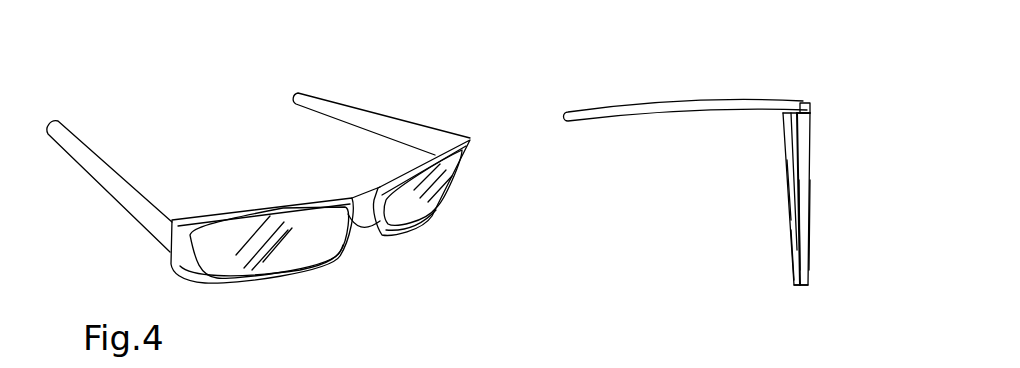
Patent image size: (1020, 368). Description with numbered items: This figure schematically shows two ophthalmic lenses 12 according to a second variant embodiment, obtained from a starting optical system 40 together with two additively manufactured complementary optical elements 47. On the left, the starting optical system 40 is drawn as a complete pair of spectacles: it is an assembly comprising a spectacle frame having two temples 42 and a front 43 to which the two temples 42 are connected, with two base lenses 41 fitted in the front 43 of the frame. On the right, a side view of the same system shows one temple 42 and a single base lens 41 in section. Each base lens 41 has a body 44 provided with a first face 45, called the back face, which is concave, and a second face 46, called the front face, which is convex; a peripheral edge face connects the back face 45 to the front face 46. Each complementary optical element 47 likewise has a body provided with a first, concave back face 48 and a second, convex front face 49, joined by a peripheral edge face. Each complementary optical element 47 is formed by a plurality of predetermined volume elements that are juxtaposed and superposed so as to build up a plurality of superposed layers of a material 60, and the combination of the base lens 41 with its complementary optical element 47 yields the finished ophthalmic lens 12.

The starting optical system 40 is at (252, 89).
The base lens 41 is at (267, 257).
The temple 42 is at (108, 167).
The front 43 is at (268, 202).
The body 44 is at (811, 260).
The back face 45 is at (792, 170).
The front face 46 is at (814, 232).
The complementary optical element 47 is at (787, 150).
The back face 48 is at (797, 247).
The front face 49 is at (806, 133).
The material 60 is at (783, 100).
The ophthalmic lens 12 is at (798, 296).